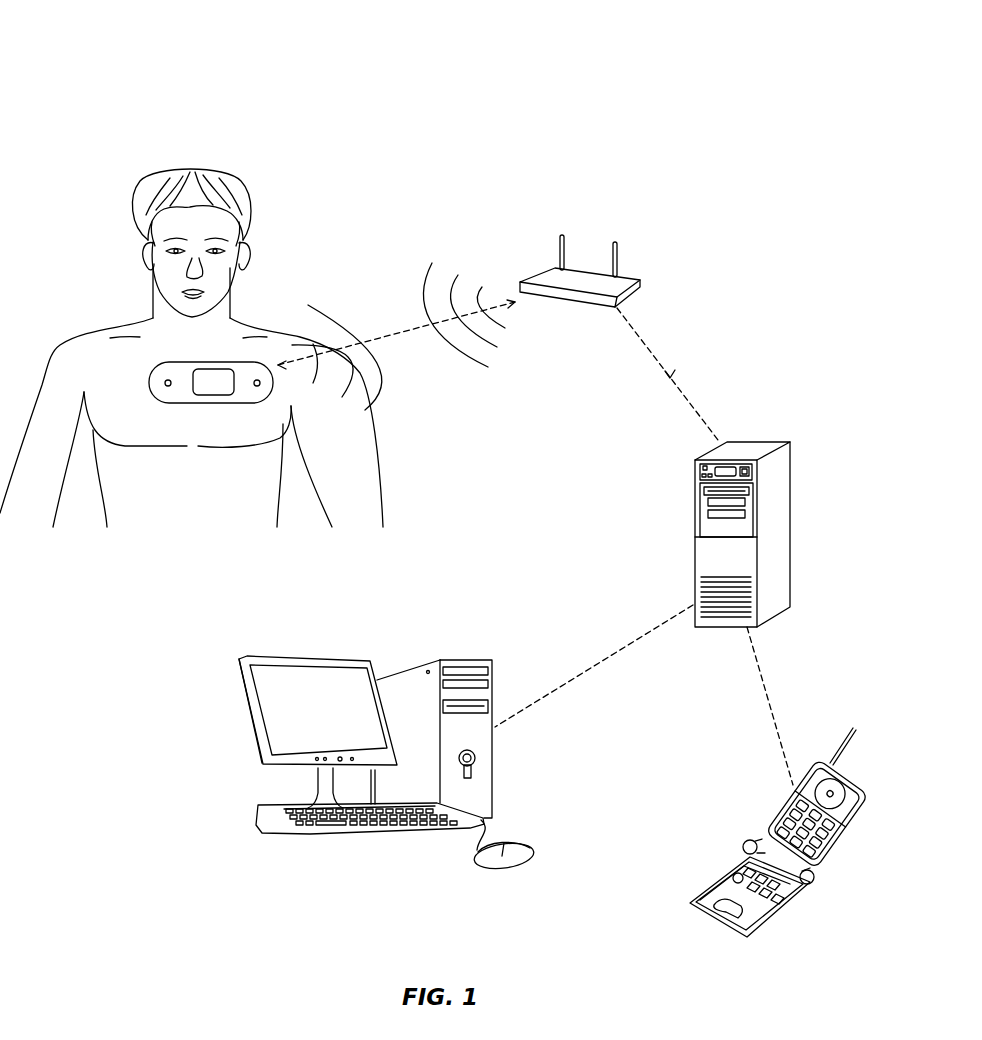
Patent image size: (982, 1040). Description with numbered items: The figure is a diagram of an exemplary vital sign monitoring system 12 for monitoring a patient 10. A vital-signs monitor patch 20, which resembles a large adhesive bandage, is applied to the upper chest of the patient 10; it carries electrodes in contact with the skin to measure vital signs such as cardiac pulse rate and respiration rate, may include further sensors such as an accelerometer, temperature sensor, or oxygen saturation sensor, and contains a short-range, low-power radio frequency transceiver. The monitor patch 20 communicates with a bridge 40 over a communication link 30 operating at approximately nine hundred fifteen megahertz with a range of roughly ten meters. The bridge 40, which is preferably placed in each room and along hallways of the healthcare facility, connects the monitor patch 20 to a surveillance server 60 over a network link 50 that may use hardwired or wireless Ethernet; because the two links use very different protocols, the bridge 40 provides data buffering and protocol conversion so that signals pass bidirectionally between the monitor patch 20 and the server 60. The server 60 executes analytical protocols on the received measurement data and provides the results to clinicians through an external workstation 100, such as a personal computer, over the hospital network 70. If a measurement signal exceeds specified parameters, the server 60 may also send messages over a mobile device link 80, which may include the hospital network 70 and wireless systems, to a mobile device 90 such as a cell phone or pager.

The patient 10 is at (187, 166).
The vital sign monitoring system 12 is at (133, 74).
The vital-signs monitor patch 20 is at (185, 405).
The communication link 30 is at (382, 336).
The bridge 40 is at (575, 280).
The network link 50 is at (670, 377).
The surveillance server 60 is at (747, 450).
The hospital network 70 is at (581, 671).
The mobile device link 80 is at (768, 690).
The mobile device 90 is at (712, 922).
The workstation 100 is at (290, 707).